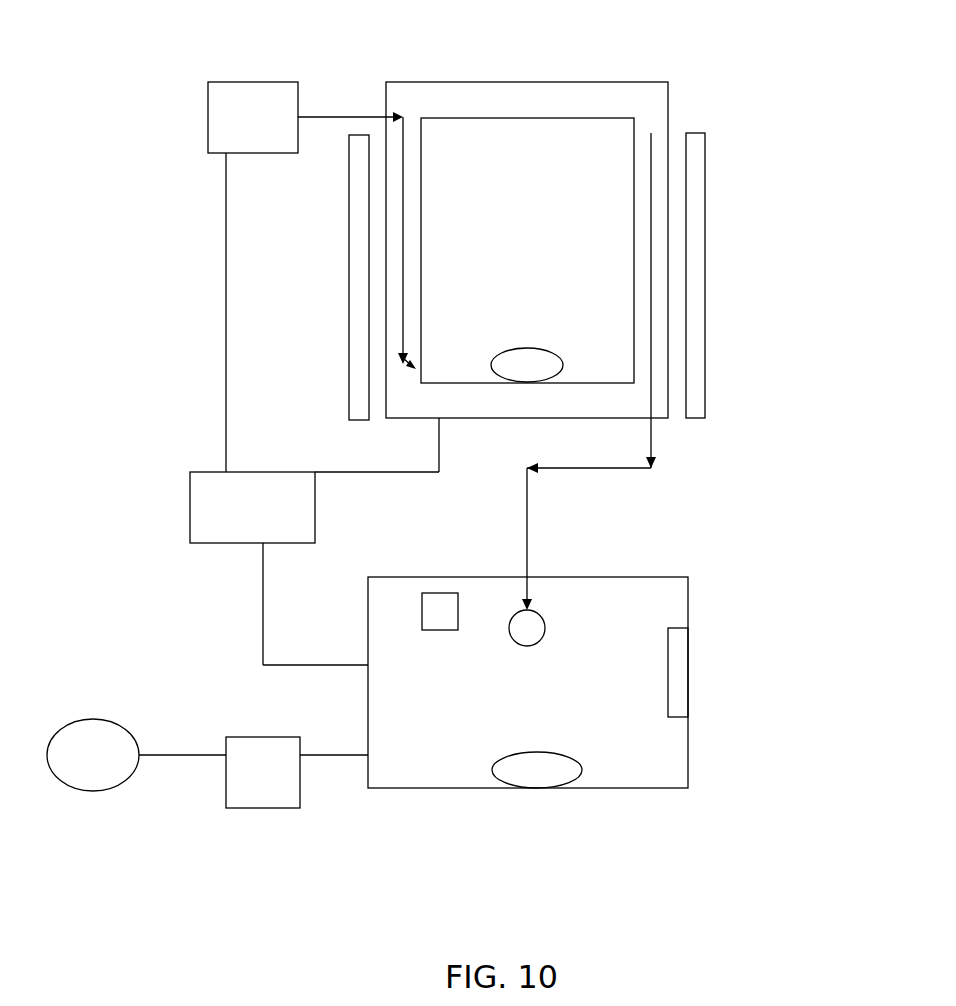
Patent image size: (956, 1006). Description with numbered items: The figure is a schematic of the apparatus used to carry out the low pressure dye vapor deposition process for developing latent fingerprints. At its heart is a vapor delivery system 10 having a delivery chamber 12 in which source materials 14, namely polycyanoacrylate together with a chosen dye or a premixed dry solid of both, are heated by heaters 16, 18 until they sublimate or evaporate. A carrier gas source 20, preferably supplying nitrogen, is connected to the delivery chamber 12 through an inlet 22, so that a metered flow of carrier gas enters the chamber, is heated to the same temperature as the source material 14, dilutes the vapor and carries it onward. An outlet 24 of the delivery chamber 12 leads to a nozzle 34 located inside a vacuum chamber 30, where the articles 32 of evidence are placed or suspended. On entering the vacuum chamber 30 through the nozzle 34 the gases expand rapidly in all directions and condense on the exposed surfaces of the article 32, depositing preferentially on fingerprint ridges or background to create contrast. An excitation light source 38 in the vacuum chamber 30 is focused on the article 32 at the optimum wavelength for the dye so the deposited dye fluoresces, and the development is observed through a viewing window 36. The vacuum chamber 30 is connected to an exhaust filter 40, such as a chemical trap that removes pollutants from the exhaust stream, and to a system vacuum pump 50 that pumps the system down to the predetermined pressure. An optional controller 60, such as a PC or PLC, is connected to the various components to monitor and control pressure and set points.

The vapor delivery system 10 is at (692, 41).
The delivery chamber 12 is at (490, 81).
The source materials 14 is at (530, 348).
The heater 16 is at (348, 350).
The heater 18 is at (707, 240).
The carrier gas source 20 is at (262, 82).
The inlet 22 is at (420, 362).
The outlet 24 is at (640, 134).
The vacuum chamber 30 is at (672, 577).
The article 32 is at (547, 753).
The nozzle 34 is at (546, 628).
The viewing window 36 is at (690, 681).
The excitation light source 38 is at (440, 593).
The exhaust filter 40 is at (263, 737).
The system vacuum pump 50 is at (83, 719).
The controller 60 is at (190, 486).